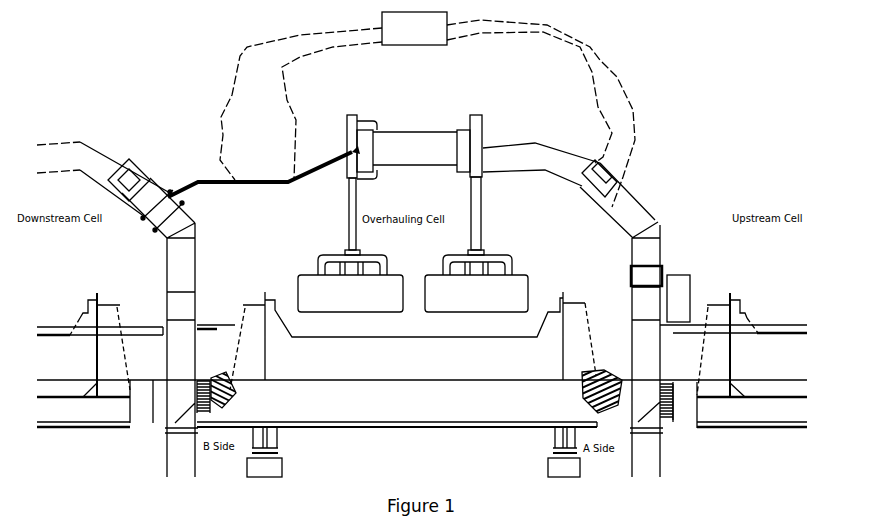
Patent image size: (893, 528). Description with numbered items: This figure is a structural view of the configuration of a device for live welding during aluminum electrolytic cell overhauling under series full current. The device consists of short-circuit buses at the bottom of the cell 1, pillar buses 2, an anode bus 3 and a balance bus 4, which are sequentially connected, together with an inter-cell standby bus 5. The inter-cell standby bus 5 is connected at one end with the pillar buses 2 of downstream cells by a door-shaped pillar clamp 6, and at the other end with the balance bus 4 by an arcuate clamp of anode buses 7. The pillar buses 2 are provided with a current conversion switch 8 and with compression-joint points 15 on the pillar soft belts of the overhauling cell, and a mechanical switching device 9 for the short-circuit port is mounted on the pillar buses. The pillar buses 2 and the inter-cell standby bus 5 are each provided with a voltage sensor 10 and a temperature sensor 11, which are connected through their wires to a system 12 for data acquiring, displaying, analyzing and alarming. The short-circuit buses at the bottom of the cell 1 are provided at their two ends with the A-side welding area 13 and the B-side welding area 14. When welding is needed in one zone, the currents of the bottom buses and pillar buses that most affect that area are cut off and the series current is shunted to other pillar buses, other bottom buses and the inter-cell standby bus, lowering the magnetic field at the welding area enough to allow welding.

The short-circuit buses at the bottom of the cell 1 is at (423, 413).
The pillar buses 2 is at (628, 202).
The anode bus 3 is at (467, 142).
The balance bus 4 is at (406, 140).
The inter-cell standby bus 5 is at (248, 183).
The door-shaped pillar clamp 6 is at (172, 194).
The arcuate clamp of anode buses 7 is at (348, 128).
The current conversion switch 8 is at (655, 272).
The mechanical switching device for the short-circuit port 9 is at (678, 293).
The voltage sensor and wires thereof 10 is at (228, 97).
The temperature sensor and wires thereof 11 is at (282, 80).
The system for data acquiring, displaying, analyzing and alarming 12 is at (405, 40).
The A-side welding area 13 is at (582, 400).
The B-side welding area 14 is at (233, 393).
The compression-joint points on pillar soft belts of overhauling cells 15 is at (608, 175).